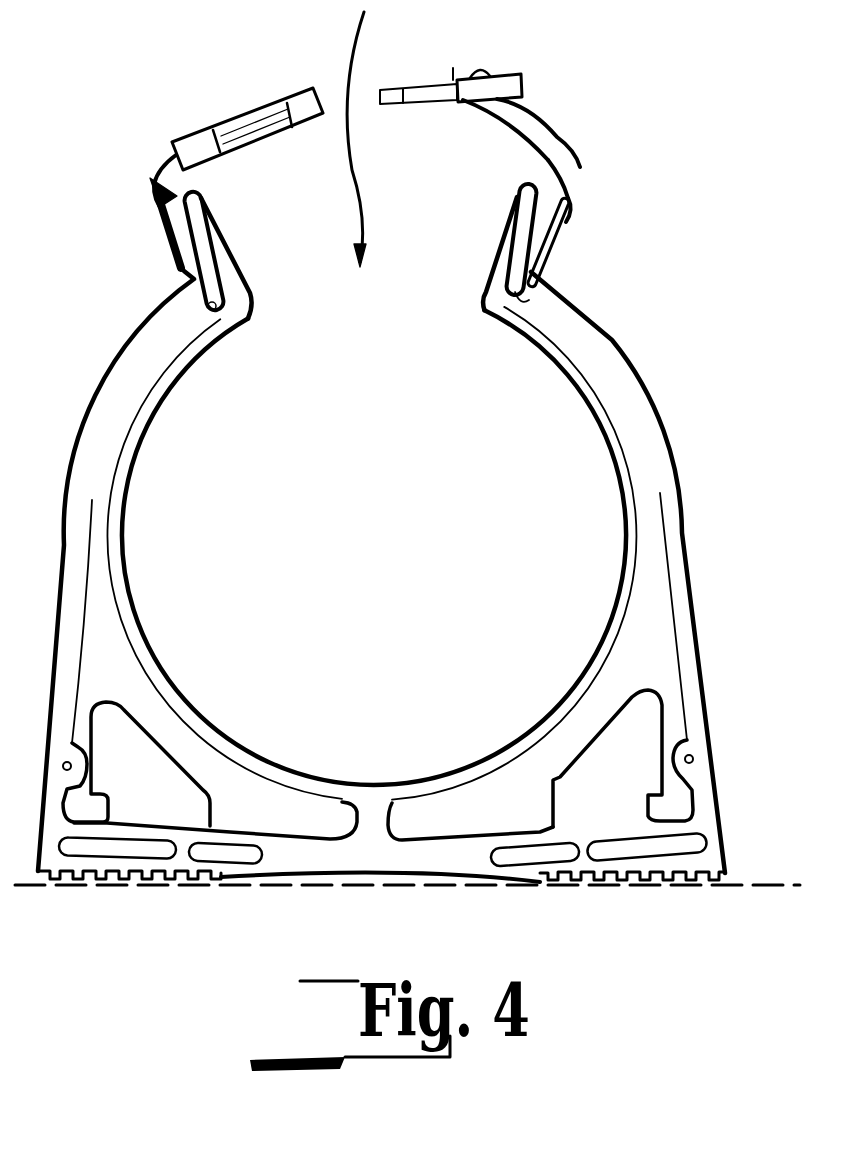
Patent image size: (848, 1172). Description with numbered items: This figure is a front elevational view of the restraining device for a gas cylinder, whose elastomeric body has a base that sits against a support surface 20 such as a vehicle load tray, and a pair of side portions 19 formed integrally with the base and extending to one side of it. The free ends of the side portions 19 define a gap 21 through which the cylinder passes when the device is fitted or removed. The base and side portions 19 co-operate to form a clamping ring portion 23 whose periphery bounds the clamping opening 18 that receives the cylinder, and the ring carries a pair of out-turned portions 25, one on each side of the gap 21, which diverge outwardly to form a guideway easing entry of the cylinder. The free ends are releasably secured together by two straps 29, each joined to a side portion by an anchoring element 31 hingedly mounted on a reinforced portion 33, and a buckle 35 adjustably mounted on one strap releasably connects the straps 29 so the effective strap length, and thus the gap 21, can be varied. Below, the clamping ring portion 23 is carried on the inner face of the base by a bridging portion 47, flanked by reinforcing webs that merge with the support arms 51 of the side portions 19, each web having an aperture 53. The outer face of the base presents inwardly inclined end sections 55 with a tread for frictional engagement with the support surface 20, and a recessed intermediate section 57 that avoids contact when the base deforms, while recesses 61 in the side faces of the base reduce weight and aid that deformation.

The clamping opening 18 is at (560, 437).
The side portions 19 is at (142, 334).
The support surface 20 is at (755, 885).
The gap 21 is at (370, 133).
The clamping ring portion 23 is at (167, 377).
The out-turned portions 25 is at (226, 256).
The straps 29 is at (153, 177).
The anchoring element 31 is at (180, 244).
The reinforced portion 33 is at (523, 298).
The buckle 35 is at (266, 104).
The bridging portion 47 is at (374, 814).
The support arm 51 is at (72, 547).
The aperture 53 is at (110, 738).
The end sections 55 is at (146, 884).
The intermediate section 57 is at (406, 880).
The recesses 61 is at (697, 845).